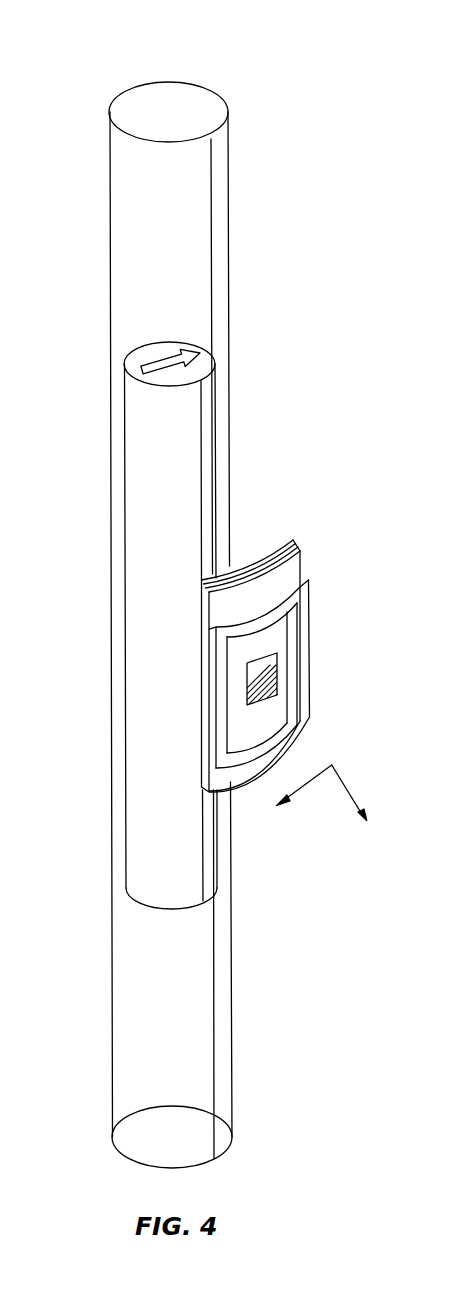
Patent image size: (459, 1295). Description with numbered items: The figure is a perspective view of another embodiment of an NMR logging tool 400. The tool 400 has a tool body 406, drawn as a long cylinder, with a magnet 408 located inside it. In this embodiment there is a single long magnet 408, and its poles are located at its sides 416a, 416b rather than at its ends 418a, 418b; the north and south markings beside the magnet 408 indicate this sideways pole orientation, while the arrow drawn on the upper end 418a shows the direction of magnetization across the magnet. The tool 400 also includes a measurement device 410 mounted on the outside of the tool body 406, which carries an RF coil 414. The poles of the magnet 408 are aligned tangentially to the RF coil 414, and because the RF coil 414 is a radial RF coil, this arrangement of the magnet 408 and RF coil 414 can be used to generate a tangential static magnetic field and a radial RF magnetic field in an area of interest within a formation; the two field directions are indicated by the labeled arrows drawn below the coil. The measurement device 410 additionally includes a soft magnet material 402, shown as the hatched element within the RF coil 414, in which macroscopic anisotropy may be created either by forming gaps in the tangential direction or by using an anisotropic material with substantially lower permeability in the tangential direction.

The NMR logging tool 400 is at (296, 52).
The soft magnet material 402 is at (278, 676).
The tool body 406 is at (128, 165).
The magnet 408 is at (172, 629).
The measurement device 410 is at (296, 540).
The RF coil 414 is at (312, 592).
The side of magnet 416a is at (218, 437).
The side of magnet 416b is at (121, 548).
The end of magnet 418a is at (145, 354).
The end of magnet 418b is at (153, 907).